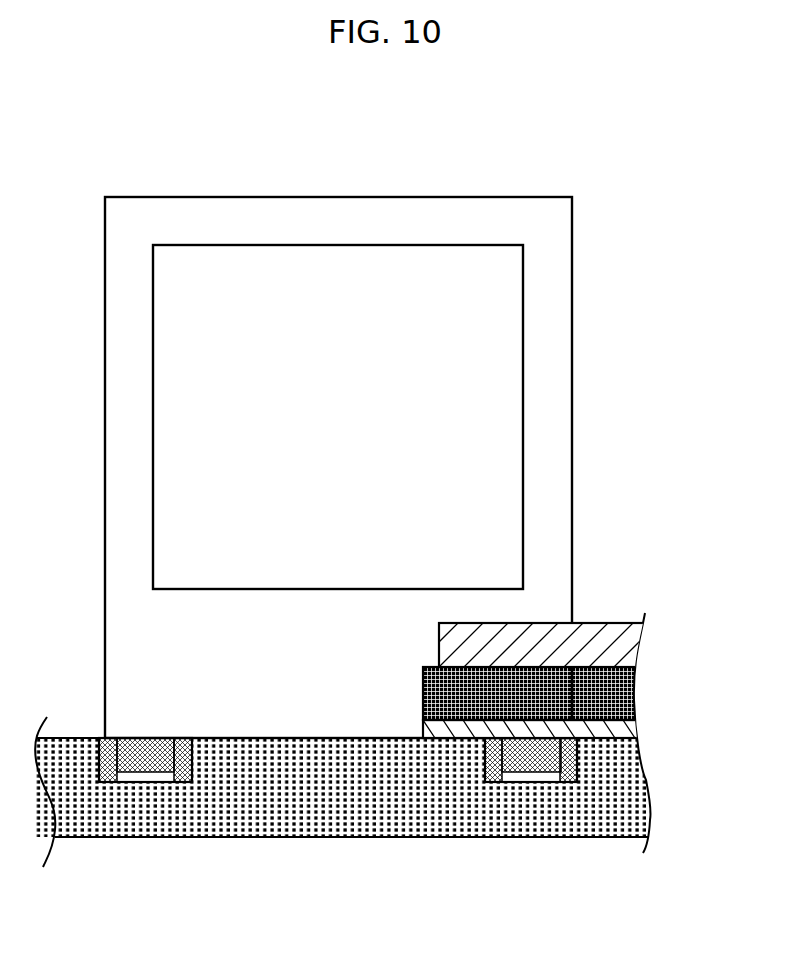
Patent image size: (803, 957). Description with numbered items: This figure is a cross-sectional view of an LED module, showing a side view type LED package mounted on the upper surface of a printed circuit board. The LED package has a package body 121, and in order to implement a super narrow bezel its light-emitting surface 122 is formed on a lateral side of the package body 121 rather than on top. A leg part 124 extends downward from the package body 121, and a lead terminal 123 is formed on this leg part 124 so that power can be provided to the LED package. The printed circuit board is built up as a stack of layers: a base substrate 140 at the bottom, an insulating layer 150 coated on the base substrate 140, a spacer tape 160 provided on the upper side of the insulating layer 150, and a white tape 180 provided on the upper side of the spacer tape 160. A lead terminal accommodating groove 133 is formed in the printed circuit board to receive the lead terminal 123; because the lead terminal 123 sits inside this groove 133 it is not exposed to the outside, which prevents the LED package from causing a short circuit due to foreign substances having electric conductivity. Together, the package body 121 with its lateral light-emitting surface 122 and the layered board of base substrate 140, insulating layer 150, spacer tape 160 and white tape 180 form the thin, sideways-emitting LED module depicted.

The package body 121 is at (288, 218).
The light-emitting surface 122 is at (420, 283).
The lead terminal 123 is at (587, 824).
The leg part 124 is at (562, 755).
The lead terminal accommodating groove 133 is at (488, 755).
The base substrate 140 is at (587, 820).
The insulating layer 150 is at (633, 731).
The spacer tape 160 is at (628, 690).
The white tape 180 is at (627, 641).